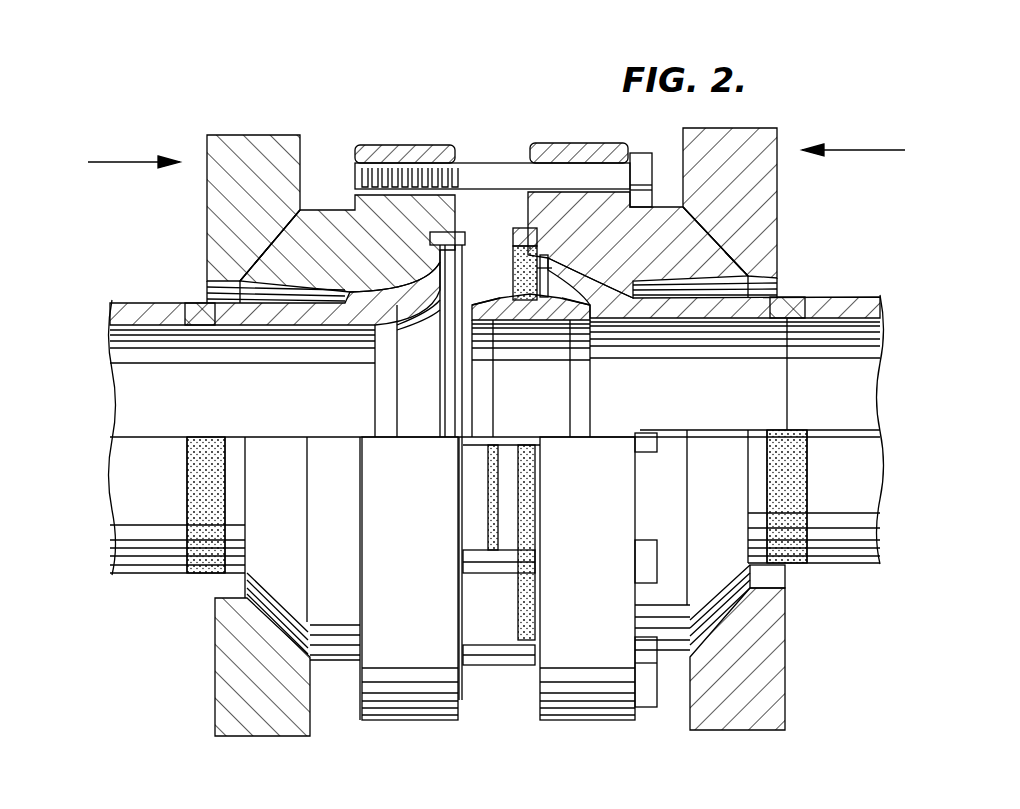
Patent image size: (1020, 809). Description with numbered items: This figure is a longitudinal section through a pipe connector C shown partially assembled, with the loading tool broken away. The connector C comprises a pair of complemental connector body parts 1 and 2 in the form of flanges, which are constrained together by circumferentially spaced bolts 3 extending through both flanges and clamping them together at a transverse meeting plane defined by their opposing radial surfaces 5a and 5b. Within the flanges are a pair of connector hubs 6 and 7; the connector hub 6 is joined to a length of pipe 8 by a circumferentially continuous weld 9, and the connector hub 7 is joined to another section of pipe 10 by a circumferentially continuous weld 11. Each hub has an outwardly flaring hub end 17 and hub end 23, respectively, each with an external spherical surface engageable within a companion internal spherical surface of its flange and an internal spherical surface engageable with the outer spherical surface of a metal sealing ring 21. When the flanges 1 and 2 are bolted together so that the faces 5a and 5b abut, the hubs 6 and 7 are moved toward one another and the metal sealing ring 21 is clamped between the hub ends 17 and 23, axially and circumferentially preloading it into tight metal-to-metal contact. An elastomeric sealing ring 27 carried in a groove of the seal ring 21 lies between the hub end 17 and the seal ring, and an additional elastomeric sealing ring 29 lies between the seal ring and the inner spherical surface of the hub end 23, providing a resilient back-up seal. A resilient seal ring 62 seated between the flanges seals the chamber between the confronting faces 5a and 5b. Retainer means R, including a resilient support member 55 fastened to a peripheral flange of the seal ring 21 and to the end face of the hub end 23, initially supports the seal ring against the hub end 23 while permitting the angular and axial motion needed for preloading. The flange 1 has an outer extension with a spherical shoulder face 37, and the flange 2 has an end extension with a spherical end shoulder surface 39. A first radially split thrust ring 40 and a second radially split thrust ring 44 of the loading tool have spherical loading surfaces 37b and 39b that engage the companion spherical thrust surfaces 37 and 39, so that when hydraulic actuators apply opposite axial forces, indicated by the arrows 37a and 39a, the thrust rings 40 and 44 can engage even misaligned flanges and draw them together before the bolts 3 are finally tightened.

The connector body part 1 is at (368, 140).
The connector body part 2 is at (565, 140).
The bolt 3 is at (492, 163).
The radial surface 5a is at (460, 488).
The radial surface 5b is at (527, 487).
The connector hub 6 is at (275, 313).
The connector hub 7 is at (725, 312).
The pipe 8 is at (125, 513).
The weld 9 is at (200, 558).
The pipe 10 is at (870, 565).
The weld 11 is at (802, 565).
The hub end 17 is at (394, 275).
The metal sealing ring 21 is at (535, 312).
The hub end 23 is at (605, 267).
The elastomeric sealing ring 27 is at (493, 300).
The elastomeric sealing ring 29 is at (570, 300).
The spherical shoulder face 37 is at (275, 235).
The arrow 37a is at (125, 162).
The spherical loading surface 37b is at (258, 262).
The end shoulder surface 39 is at (718, 232).
The arrow 39a is at (887, 150).
The spherical loading surface 39b is at (740, 260).
The first radially split ring 40 is at (215, 212).
The second radially split ring 44 is at (777, 192).
The resilient support member 55 is at (518, 262).
The resilient seal ring 62 is at (527, 230).
The pipe connector C is at (424, 140).
The retainer means R is at (518, 248).